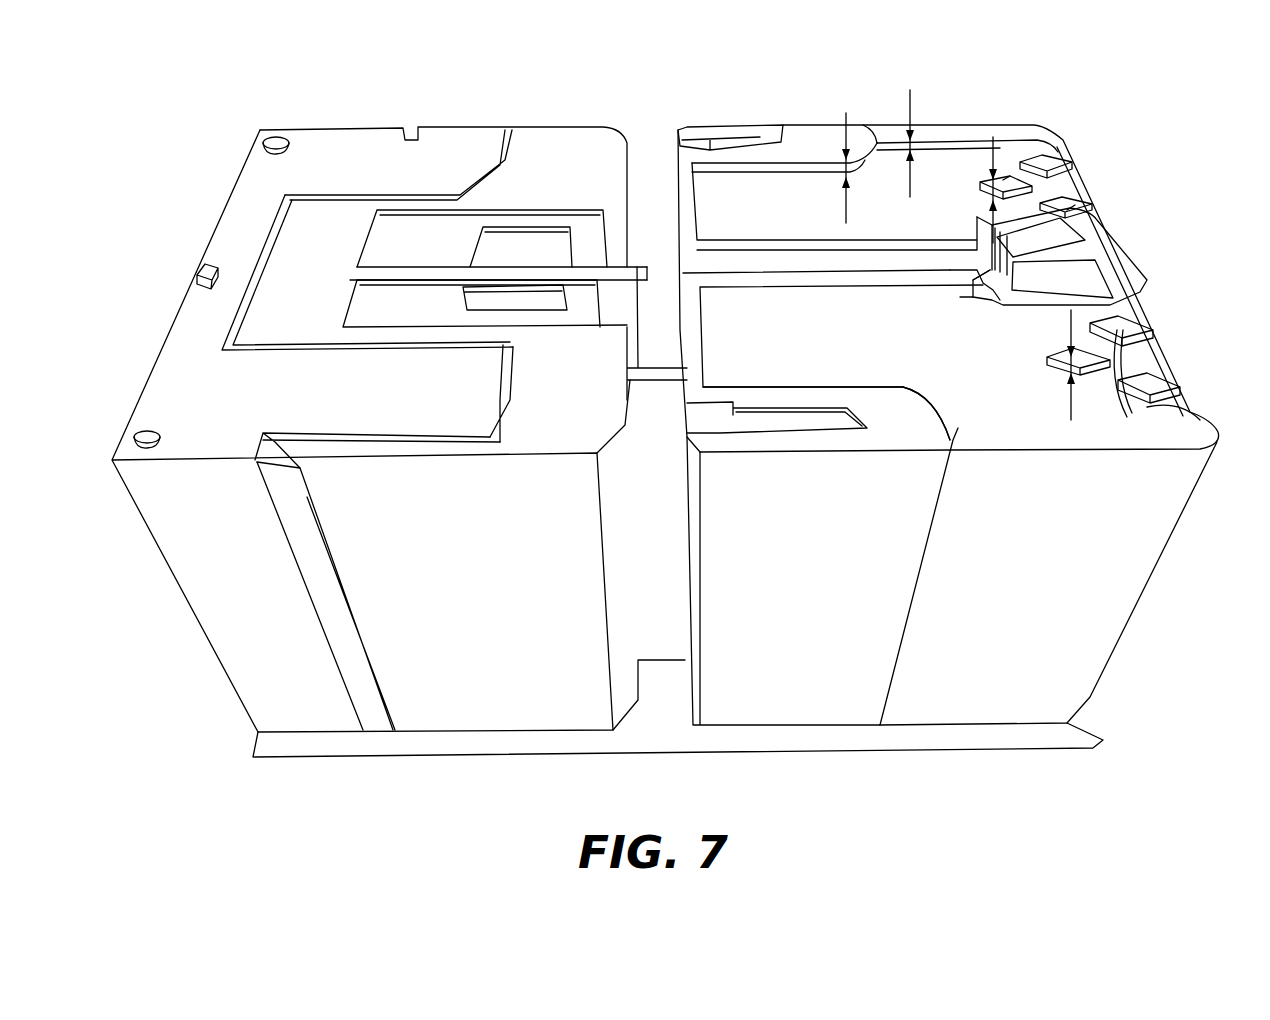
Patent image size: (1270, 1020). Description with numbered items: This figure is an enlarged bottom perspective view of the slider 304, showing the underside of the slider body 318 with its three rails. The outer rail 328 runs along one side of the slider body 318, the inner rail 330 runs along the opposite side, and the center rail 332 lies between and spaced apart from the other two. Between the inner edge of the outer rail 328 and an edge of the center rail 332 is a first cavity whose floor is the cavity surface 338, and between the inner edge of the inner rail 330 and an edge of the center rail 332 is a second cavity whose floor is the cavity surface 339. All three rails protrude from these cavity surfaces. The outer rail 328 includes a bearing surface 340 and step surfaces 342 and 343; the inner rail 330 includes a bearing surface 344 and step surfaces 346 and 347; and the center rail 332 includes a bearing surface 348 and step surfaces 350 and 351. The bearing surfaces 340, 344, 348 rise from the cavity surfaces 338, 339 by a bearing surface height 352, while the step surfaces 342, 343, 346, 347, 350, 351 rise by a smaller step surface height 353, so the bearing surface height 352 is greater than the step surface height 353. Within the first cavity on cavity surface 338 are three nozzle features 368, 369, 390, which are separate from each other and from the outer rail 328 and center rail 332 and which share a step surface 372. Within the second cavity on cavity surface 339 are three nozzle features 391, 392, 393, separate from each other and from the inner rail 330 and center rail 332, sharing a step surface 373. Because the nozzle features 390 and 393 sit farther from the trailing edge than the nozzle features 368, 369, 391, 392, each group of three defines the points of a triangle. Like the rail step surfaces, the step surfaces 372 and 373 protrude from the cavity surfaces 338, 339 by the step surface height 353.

The slider 304 is at (1115, 78).
The slider body 318 is at (170, 595).
The outer rail 328 is at (812, 115).
The inner rail 330 is at (898, 380).
The center rail 332 is at (938, 290).
The cavity surface 338 is at (812, 214).
The cavity surface 339 is at (817, 347).
The bearing surface 340 is at (823, 137).
The step surface 342 is at (943, 130).
The step surface 343 is at (758, 145).
The bearing surface 344 is at (857, 398).
The step surface 346 is at (1152, 432).
The step surface 347 is at (792, 417).
The bearing surface 348 is at (1118, 278).
The step surface 350 is at (1063, 238).
The step surface 351 is at (1050, 272).
The bearing surface height 352 is at (846, 190).
The step surface height 353 is at (911, 172).
The nozzle feature 368 is at (1068, 155).
The nozzle feature 369 is at (1086, 192).
The step surface 372 is at (1067, 210).
The step surface 373 is at (1127, 417).
The nozzle feature 390 is at (980, 178).
The nozzle feature 391 is at (1140, 305).
The nozzle feature 392 is at (1162, 370).
The nozzle feature 393 is at (1058, 350).